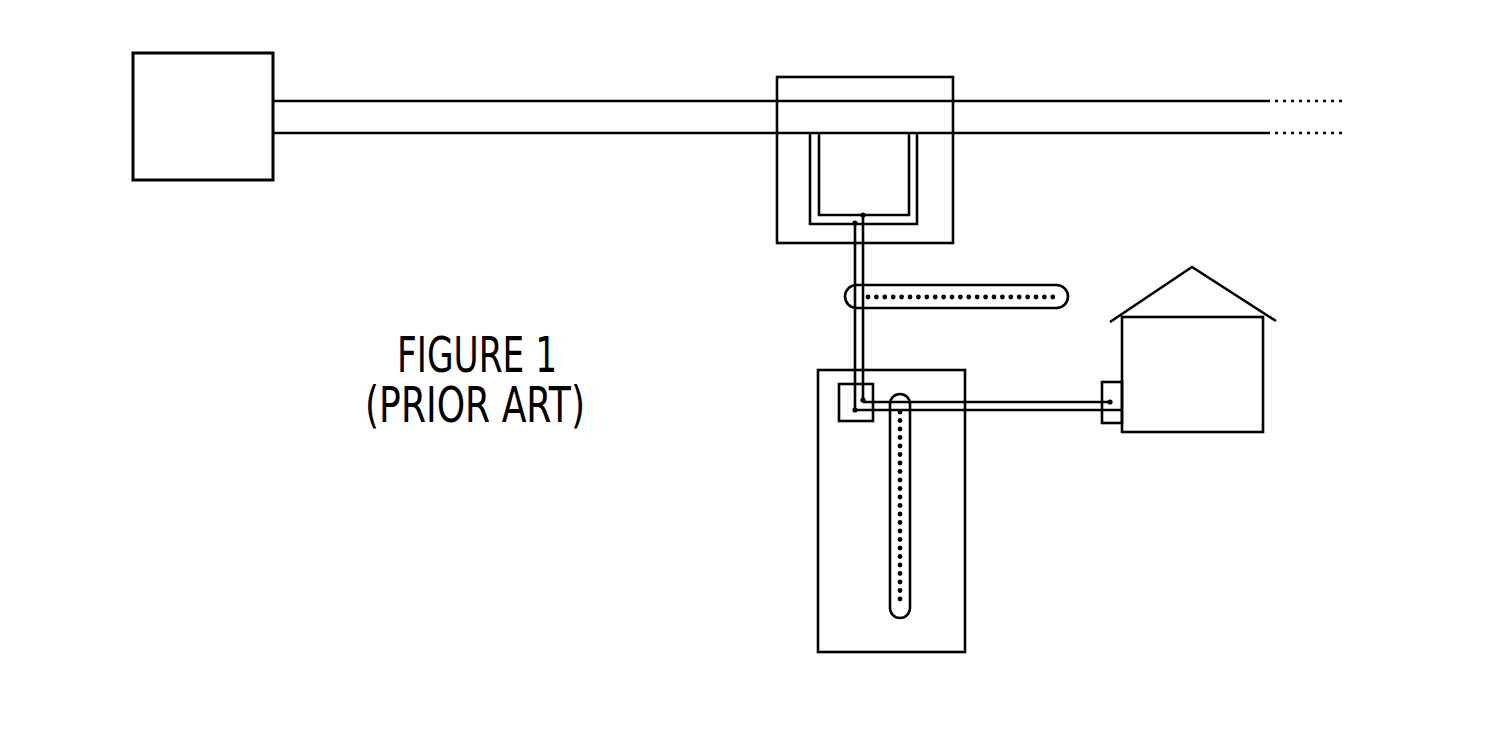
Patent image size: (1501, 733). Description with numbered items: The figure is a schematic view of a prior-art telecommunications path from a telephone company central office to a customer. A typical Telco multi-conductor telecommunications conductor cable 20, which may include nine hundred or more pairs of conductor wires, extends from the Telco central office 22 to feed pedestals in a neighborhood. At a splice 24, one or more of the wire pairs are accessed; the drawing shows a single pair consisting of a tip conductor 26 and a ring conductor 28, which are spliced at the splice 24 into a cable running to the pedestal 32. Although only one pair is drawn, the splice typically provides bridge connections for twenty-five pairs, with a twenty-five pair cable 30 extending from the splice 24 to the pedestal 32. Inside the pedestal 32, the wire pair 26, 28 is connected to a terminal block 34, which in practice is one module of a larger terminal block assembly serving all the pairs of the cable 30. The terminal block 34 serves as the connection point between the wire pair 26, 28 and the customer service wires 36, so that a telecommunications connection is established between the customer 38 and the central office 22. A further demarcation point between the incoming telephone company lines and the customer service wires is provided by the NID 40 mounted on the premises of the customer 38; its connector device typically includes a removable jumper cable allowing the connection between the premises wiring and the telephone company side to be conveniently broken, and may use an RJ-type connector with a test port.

The telecommunications conductor cable 20 is at (337, 101).
The Telco central office 22 is at (190, 53).
The splice 24 is at (878, 77).
The tip conductor 26 is at (917, 170).
The ring conductor 28 is at (907, 142).
The 25 pair cable 30 is at (1022, 285).
The pedestal 32 is at (816, 500).
The terminal block 34 is at (867, 422).
The customer service wires 36 is at (1015, 412).
The customer 38 is at (1263, 340).
The NID 40 is at (1103, 425).